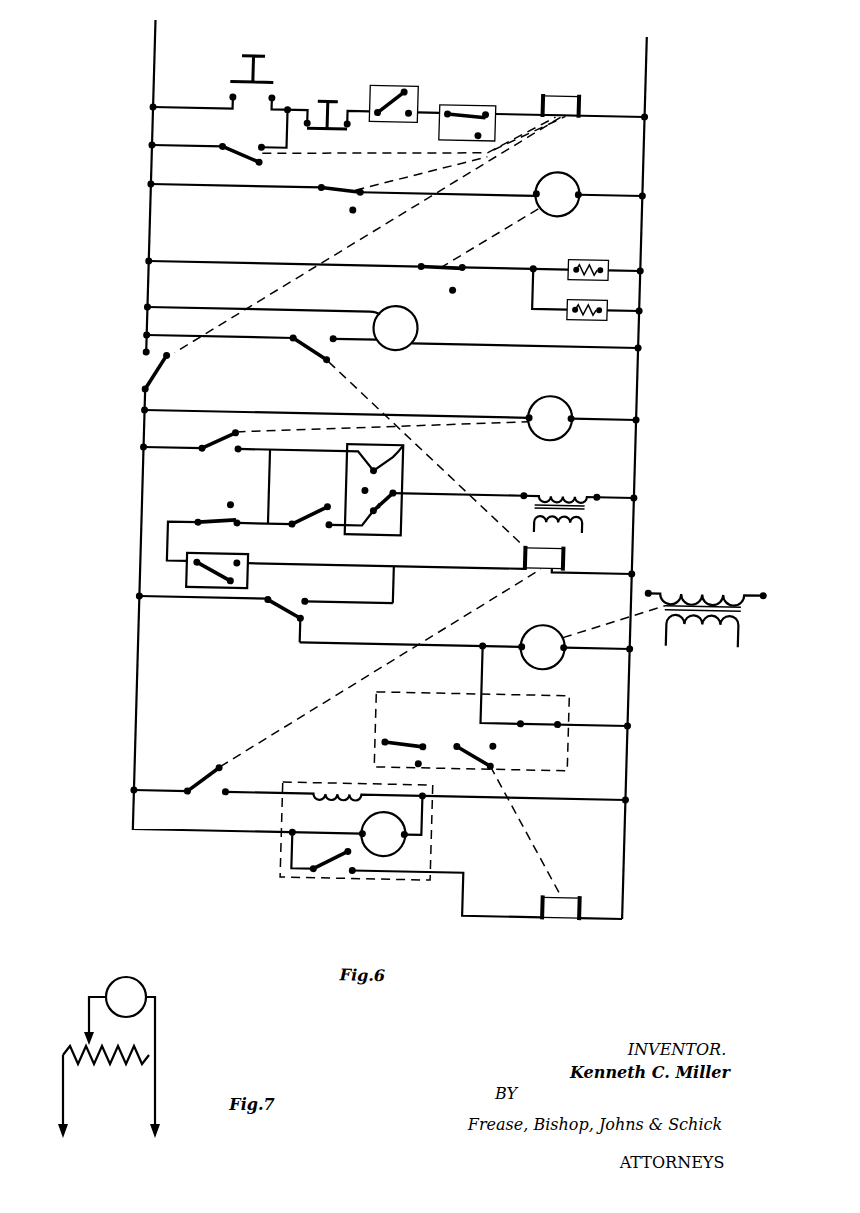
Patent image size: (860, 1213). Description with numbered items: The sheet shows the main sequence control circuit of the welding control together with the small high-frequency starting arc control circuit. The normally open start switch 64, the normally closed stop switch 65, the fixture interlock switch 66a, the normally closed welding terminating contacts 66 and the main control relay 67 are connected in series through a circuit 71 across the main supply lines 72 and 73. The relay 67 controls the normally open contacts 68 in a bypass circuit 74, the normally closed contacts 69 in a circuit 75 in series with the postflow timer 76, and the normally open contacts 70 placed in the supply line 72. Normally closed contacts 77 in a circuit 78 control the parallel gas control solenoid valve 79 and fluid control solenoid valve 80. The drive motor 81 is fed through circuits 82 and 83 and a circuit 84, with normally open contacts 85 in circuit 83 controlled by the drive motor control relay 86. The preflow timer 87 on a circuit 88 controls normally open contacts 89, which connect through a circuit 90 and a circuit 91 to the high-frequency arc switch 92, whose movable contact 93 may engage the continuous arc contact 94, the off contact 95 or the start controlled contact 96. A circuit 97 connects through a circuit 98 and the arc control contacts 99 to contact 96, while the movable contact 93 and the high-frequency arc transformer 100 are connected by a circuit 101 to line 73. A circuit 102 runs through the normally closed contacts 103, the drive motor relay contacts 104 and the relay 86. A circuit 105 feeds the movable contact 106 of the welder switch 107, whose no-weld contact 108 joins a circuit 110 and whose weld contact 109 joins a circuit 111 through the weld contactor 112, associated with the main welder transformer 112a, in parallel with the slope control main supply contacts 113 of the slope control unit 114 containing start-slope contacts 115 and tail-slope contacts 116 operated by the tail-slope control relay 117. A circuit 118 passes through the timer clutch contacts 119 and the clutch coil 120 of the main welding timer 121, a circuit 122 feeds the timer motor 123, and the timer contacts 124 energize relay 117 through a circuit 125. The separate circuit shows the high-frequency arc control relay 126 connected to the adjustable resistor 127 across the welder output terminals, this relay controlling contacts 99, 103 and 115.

In FIG. 6, the start switch 64 is at (240, 72).
In FIG. 6, the stop switch 65 is at (332, 97).
In FIG. 6, the welding terminating contacts 66 is at (468, 104).
In FIG. 6, the fixture interlock switch 66a is at (398, 90).
In FIG. 6, the main control relay 67 is at (560, 88).
In FIG. 6, the main control relay normally open contacts 68 is at (245, 152).
In FIG. 6, the main control relay normally closed contacts 69 is at (342, 186).
In FIG. 6, the main control relay normally open contacts 70 is at (163, 375).
In FIG. 6, the circuit 71 is at (185, 107).
In FIG. 6, the main supply line 72 is at (155, 38).
In FIG. 6, the main supply line 73 is at (647, 33).
In FIG. 6, the bypass circuit 74 is at (192, 145).
In FIG. 6, the circuit 75 is at (200, 184).
In FIG. 6, the gas shield and cooling fluid postflow timer 76 is at (575, 170).
In FIG. 6, the normally closed contacts 77 is at (440, 261).
In FIG. 6, the circuit 78 is at (203, 261).
In FIG. 6, the gas control solenoid valve 79 is at (590, 254).
In FIG. 6, the fluid control solenoid valve 80 is at (590, 309).
In FIG. 6, the drive motor 81 is at (408, 302).
In FIG. 6, the circuit 82 is at (190, 307).
In FIG. 6, the circuit 83 is at (208, 335).
In FIG. 6, the circuit 84 is at (486, 338).
In FIG. 6, the normally open contacts 85 is at (320, 347).
In FIG. 6, the drive motor control relay 86 is at (562, 546).
In FIG. 6, the gas shield and cooling fluid preflow timer 87 is at (550, 393).
In FIG. 6, the circuit 88 is at (212, 410).
In FIG. 6, the normally open contacts 89 is at (224, 445).
In FIG. 6, the circuit 90 is at (172, 447).
In FIG. 6, the circuit 91 is at (304, 448).
In FIG. 6, the high-frequency arc switch 92 is at (415, 463).
In FIG. 6, the movable contact 93 is at (415, 508).
In FIG. 6, the continuous high-frequency arc contact 94 is at (408, 443).
In FIG. 6, the off contact 95 is at (378, 484).
In FIG. 6, the start controlled high-frequency arc contact 96 is at (384, 504).
In FIG. 6, the circuit 97 is at (282, 478).
In FIG. 6, the circuit 98 is at (307, 524).
In FIG. 6, the high-frequency arc control contacts 99 is at (325, 524).
In FIG. 6, the high-frequency arc transformer 100 is at (575, 488).
In FIG. 6, the circuit 101 is at (508, 488).
In FIG. 6, the circuit 102 is at (186, 519).
In FIG. 6, the circuit establishing contacts 103 is at (218, 519).
In FIG. 6, the drive motor relay contacts 104 is at (234, 560).
In FIG. 6, the circuit 105 is at (192, 598).
In FIG. 6, the movable contact 106 is at (298, 607).
In FIG. 6, the welder switch 107 is at (306, 608).
In FIG. 6, the no-weld contact 108 is at (318, 597).
In FIG. 6, the weld contact 109 is at (315, 634).
In FIG. 6, the circuit 110 is at (409, 588).
In FIG. 6, the circuit 111 is at (462, 640).
In FIG. 6, the weld contactor 112 is at (560, 617).
In FIG. 6, the main welder transformer 112a is at (716, 580).
In FIG. 6, the slope control main supply contacts 113 is at (578, 712).
In FIG. 6, the slope control unit 114 is at (400, 712).
In FIG. 6, the start-slope contacts 115 is at (423, 736).
In FIG. 6, the tail-slope contacts 116 is at (490, 738).
In FIG. 6, the tail-slope control relay 117 is at (592, 895).
In FIG. 6, the circuit 118 is at (180, 789).
In FIG. 6, the timer clutch contacts 119 is at (224, 778).
In FIG. 6, the timer clutch control coil 120 is at (352, 789).
In FIG. 6, the main welding timer 121 is at (304, 868).
In FIG. 6, the circuit 122 is at (176, 830).
In FIG. 6, the timer motor 123 is at (385, 822).
In FIG. 6, the tail-slope control relay contacts 124 is at (362, 866).
In FIG. 6, the circuit 125 is at (470, 870).
In FIG. 7, the high-frequency arc control relay 126 is at (114, 982).
In FIG. 7, the adjustable resistor 127 is at (72, 1044).